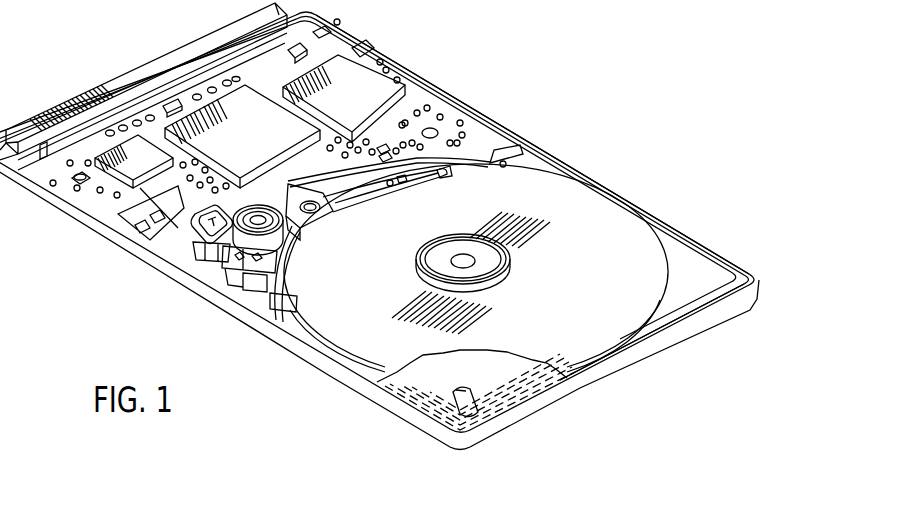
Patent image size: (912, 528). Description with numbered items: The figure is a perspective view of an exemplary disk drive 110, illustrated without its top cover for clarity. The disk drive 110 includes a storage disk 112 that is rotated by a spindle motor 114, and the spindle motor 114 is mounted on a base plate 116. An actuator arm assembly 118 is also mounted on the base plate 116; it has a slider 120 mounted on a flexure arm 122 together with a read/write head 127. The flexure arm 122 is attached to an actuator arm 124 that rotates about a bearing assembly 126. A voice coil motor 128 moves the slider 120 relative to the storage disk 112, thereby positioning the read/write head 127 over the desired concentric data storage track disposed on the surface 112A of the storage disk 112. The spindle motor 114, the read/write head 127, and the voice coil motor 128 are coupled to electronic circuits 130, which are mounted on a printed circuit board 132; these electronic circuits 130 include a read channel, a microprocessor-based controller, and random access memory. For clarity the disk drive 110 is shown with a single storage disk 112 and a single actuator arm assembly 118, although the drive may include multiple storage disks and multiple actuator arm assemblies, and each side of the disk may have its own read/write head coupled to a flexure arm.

The disk drive 110 is at (505, 112).
The storage disk 112 is at (632, 225).
The surface of storage disk 112A is at (585, 323).
The spindle motor 114 is at (497, 267).
The base plate 116 is at (668, 262).
The actuator arm assembly 118 is at (405, 202).
The slider 120 is at (437, 172).
The flexure arm 122 is at (366, 199).
The actuator arm 124 is at (298, 236).
The bearing assembly 126 is at (292, 258).
The read/write head 127 is at (427, 175).
The voice coil motor 128 is at (182, 233).
The electronic circuits 130 is at (159, 169).
The printed circuit board 132 is at (263, 72).